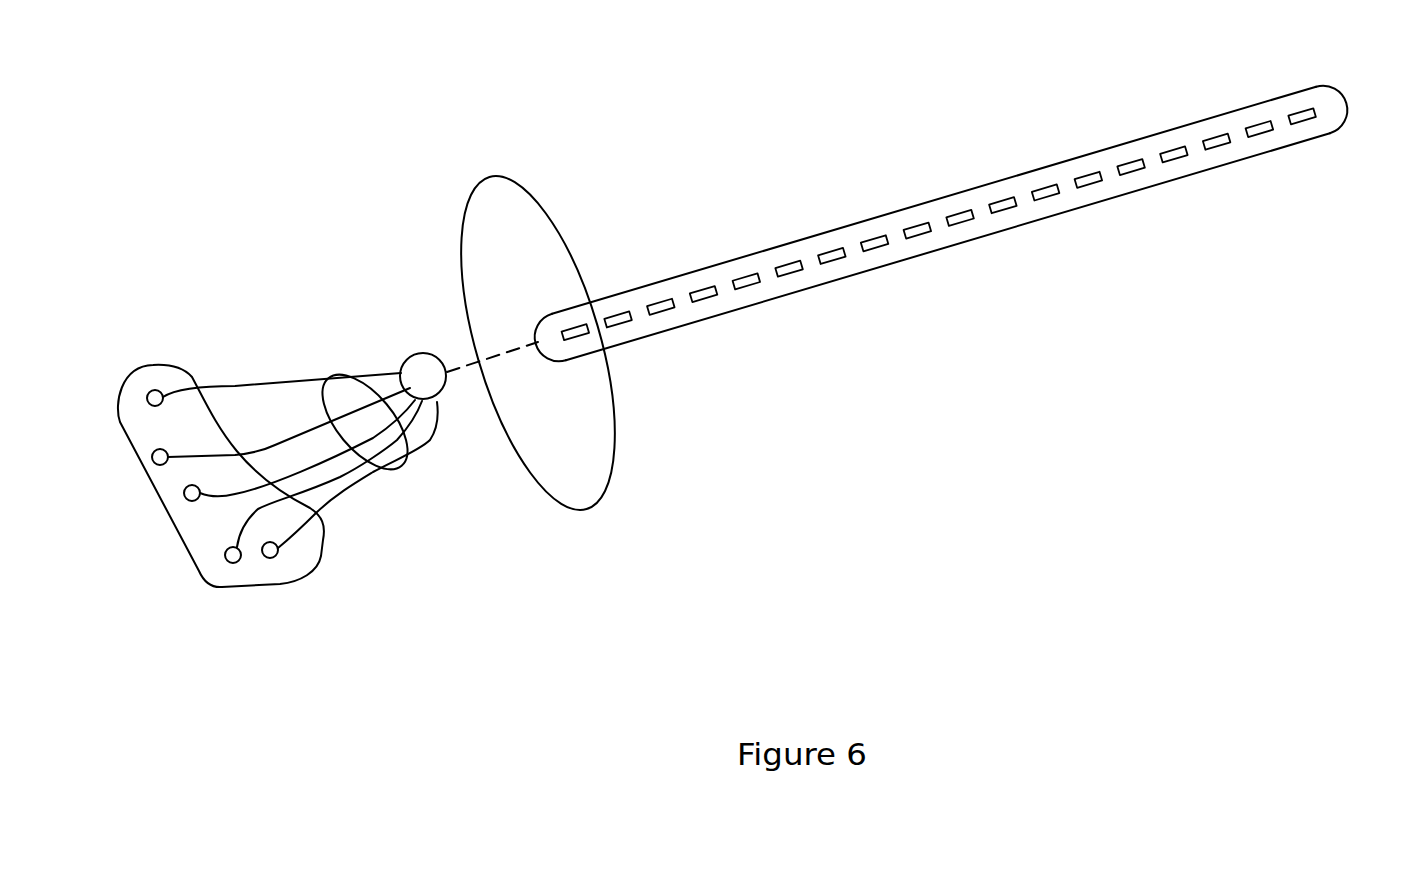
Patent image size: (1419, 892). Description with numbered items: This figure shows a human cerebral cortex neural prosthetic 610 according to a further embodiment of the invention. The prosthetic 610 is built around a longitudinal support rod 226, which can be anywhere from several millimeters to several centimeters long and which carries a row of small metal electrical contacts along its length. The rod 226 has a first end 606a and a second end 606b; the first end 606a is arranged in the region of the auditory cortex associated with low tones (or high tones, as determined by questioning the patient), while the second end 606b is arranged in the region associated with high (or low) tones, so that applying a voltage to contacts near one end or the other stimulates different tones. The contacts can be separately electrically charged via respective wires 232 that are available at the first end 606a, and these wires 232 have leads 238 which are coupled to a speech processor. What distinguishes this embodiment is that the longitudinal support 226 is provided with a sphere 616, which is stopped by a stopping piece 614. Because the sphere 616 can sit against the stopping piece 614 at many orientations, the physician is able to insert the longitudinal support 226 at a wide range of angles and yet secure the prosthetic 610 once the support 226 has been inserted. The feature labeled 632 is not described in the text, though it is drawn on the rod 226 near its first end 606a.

The longitudinal support rod 226 is at (932, 200).
The wires 232 is at (328, 378).
The leads 238 is at (155, 362).
The first end 606a is at (602, 297).
The second end 606b is at (1357, 149).
The prosthetic 610 is at (766, 116).
The stopping piece 614 is at (590, 60).
The sphere 616 is at (469, 412).
The slots 632 is at (605, 349).